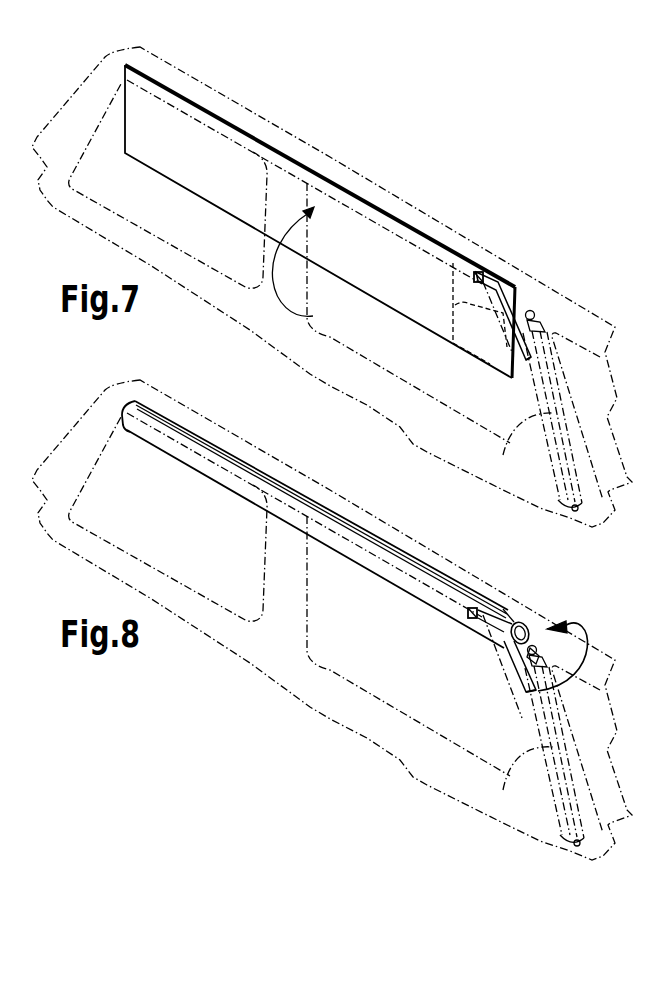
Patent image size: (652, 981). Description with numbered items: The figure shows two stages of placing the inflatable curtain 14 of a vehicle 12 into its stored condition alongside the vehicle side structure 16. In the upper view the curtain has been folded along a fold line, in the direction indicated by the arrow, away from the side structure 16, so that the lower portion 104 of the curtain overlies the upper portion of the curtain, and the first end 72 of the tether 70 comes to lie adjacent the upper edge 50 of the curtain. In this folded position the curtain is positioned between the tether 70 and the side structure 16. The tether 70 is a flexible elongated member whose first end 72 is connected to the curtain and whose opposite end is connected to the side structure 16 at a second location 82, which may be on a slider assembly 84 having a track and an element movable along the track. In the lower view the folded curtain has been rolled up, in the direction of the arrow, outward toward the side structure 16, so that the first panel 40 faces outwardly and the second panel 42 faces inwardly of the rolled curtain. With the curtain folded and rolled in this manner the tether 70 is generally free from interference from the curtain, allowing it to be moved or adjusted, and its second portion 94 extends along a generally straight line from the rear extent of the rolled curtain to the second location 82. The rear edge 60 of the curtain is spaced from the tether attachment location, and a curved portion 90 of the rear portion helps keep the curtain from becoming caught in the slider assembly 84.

In FIG. 8, the vehicle 12 is at (223, 420).
In FIG. 7, the inflatable curtain 14 is at (320, 221).
In FIG. 8, the inflatable curtain 14 is at (213, 472).
In FIG. 7, the side structure 16 is at (338, 178).
In FIG. 8, the side structure 16 is at (340, 507).
In FIG. 8, the first panel 40 is at (293, 512).
In FIG. 8, the second panel 42 is at (527, 632).
In FIG. 7, the upper edge 50 is at (293, 160).
In FIG. 8, the rear edge 60 is at (547, 624).
In FIG. 7, the tether 70 is at (498, 280).
In FIG. 8, the tether 70 is at (506, 619).
In FIG. 7, the first end 72 is at (481, 273).
In FIG. 7, the second location 82 is at (529, 358).
In FIG. 8, the second location 82 is at (528, 696).
In FIG. 7, the slider assembly 84 is at (536, 411).
In FIG. 8, the slider assembly 84 is at (538, 746).
In FIG. 8, the curved portion 90 is at (514, 621).
In FIG. 8, the second portion 94 is at (528, 655).
In FIG. 7, the lower portion 104 is at (220, 155).